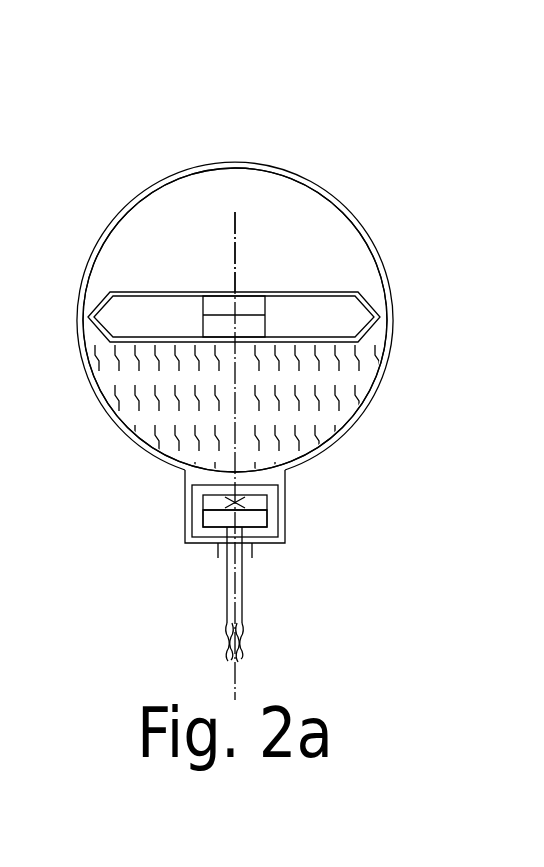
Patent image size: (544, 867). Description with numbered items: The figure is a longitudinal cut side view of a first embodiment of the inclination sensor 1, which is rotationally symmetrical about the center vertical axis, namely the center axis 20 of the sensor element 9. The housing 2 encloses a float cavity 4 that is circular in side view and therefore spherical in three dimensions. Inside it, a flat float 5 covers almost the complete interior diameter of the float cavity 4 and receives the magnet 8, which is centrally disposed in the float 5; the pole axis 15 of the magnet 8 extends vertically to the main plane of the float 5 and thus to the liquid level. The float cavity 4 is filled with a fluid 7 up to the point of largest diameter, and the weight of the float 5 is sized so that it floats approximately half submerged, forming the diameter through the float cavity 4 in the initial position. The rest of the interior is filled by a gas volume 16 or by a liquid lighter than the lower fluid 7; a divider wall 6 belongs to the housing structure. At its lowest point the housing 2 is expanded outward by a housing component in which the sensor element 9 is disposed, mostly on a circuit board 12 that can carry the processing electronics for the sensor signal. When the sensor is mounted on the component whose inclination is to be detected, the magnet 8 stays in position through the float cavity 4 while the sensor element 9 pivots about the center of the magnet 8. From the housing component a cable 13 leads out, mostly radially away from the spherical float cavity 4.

The inclination sensor 1 is at (398, 94).
The housing 2 is at (185, 528).
The float cavity 4 is at (355, 422).
The float 5 is at (350, 317).
The divider wall 6 is at (192, 476).
The fluid 7 is at (350, 386).
The magnet 8 is at (257, 300).
The sensor element 9 is at (257, 501).
The circuit board 12 is at (257, 518).
The cable 13 is at (235, 587).
The pole axis 15 is at (235, 277).
The gas volume 16 is at (235, 320).
The center axis 20 is at (248, 240).